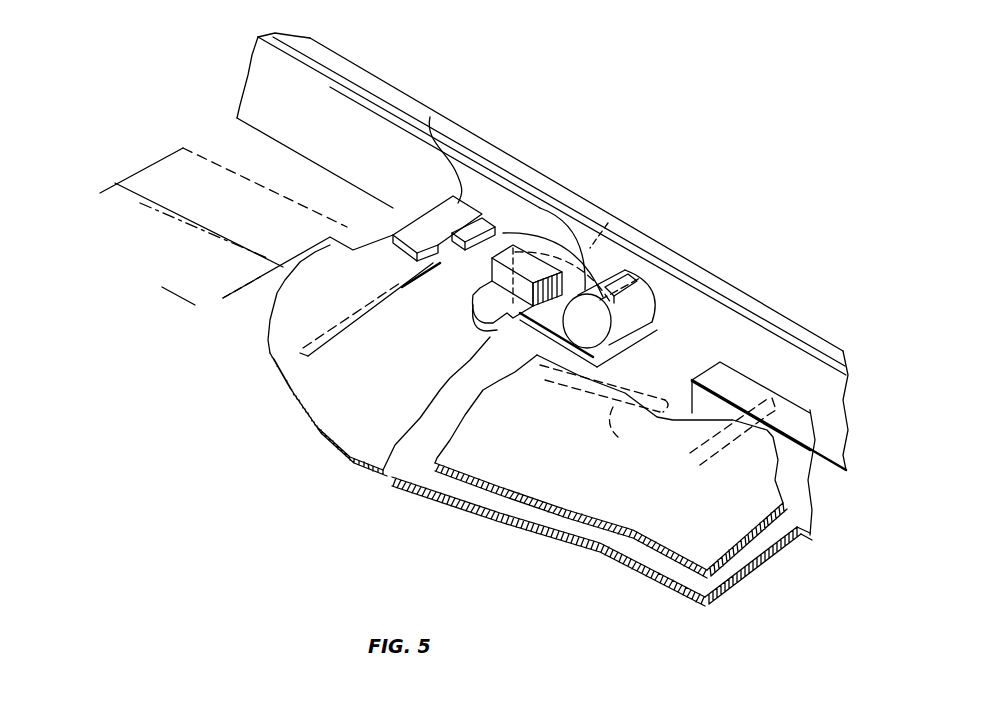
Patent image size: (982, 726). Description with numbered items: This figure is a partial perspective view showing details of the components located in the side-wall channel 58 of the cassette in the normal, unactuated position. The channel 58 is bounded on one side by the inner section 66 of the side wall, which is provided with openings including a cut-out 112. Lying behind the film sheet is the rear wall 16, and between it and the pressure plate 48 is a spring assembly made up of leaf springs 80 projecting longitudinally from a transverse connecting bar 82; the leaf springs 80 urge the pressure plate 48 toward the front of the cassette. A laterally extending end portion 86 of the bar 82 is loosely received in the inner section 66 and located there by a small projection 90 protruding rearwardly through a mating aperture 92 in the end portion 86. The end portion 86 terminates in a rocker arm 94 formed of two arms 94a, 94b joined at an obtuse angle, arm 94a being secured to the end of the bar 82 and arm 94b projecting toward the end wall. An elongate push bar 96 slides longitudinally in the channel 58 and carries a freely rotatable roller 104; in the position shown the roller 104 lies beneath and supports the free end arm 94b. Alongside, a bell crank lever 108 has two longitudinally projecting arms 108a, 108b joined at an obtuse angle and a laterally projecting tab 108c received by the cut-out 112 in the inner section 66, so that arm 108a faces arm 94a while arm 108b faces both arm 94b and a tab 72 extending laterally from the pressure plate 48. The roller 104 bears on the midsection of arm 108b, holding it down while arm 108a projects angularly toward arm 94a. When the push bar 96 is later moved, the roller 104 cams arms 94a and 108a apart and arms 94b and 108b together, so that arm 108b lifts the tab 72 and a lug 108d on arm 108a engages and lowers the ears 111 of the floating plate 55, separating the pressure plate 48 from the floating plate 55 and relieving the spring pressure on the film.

The rear wall 16 is at (567, 454).
The pressure plate 48 is at (462, 425).
The floating plate 55 is at (375, 438).
The channel 58 is at (733, 325).
The inner section 66 is at (762, 381).
The tab 72 is at (667, 340).
The leaf springs 80 is at (103, 193).
The connecting bar 82 is at (300, 355).
The end portion 86 is at (417, 207).
The projection 90 is at (538, 207).
The aperture 92 is at (560, 189).
The rocker arm 94 is at (610, 222).
The arm 94a is at (485, 170).
The arm 94b is at (657, 244).
The push bar 96 is at (368, 153).
The roller 104 is at (647, 300).
The bell crank lever 108 is at (520, 363).
The arm 108a is at (430, 120).
The arm 108b is at (618, 437).
The tab 108c is at (473, 324).
The lug 108d is at (397, 251).
The ears 111 is at (362, 248).
The cut-out 112 is at (468, 272).